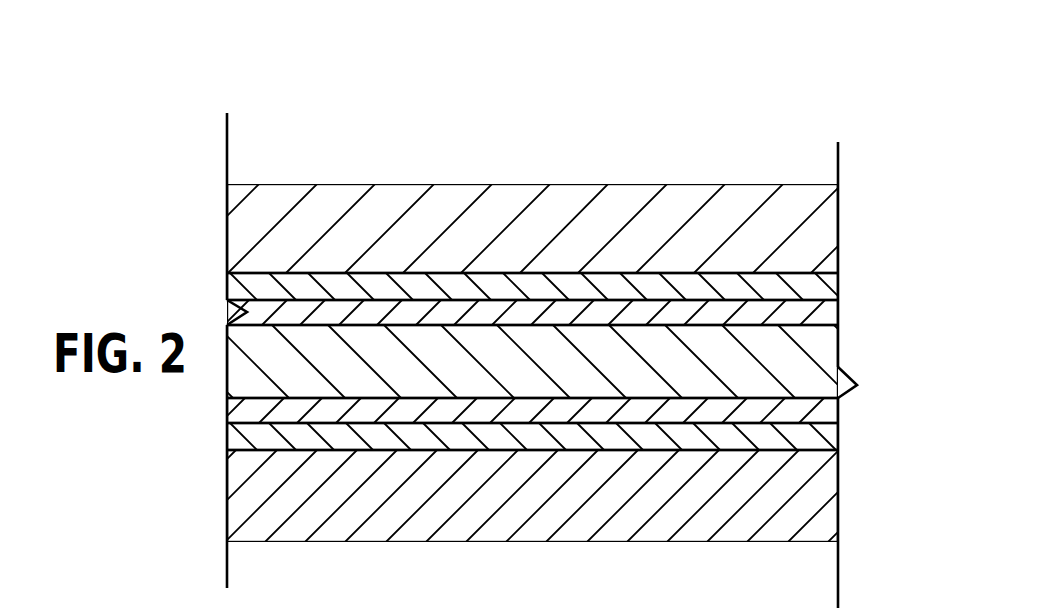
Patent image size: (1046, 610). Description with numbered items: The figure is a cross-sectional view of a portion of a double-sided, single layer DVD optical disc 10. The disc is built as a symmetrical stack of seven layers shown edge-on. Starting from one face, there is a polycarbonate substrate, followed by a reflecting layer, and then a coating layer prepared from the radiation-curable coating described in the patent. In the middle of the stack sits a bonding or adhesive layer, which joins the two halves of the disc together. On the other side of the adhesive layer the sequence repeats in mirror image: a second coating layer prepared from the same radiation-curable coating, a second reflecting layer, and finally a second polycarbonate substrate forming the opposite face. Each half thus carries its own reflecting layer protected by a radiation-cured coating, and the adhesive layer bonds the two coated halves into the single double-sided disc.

The double-sided, single layer, DVD optical disc 10 is at (743, 150).